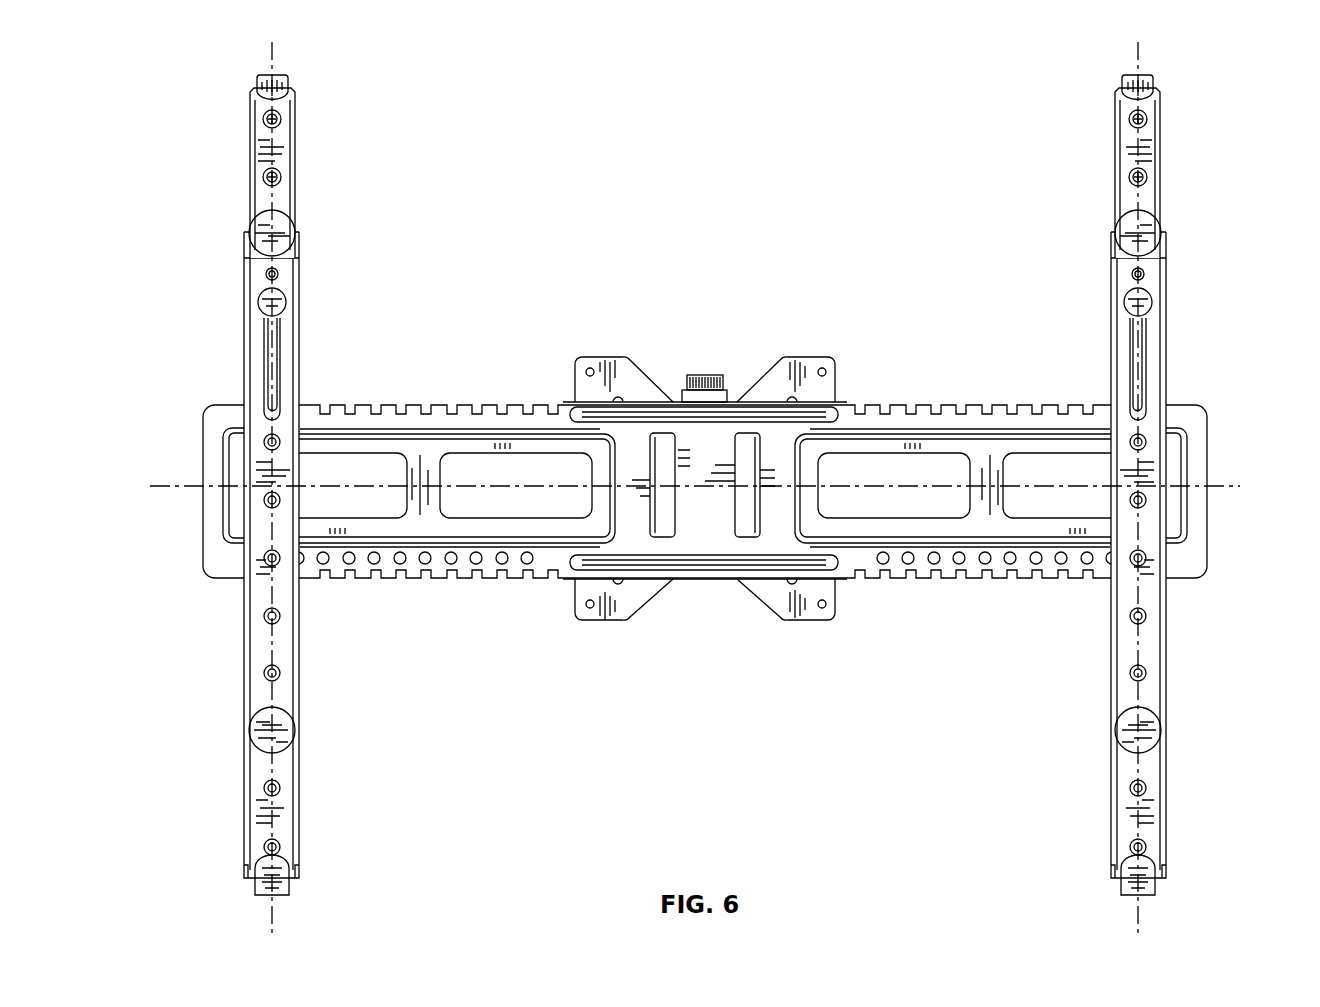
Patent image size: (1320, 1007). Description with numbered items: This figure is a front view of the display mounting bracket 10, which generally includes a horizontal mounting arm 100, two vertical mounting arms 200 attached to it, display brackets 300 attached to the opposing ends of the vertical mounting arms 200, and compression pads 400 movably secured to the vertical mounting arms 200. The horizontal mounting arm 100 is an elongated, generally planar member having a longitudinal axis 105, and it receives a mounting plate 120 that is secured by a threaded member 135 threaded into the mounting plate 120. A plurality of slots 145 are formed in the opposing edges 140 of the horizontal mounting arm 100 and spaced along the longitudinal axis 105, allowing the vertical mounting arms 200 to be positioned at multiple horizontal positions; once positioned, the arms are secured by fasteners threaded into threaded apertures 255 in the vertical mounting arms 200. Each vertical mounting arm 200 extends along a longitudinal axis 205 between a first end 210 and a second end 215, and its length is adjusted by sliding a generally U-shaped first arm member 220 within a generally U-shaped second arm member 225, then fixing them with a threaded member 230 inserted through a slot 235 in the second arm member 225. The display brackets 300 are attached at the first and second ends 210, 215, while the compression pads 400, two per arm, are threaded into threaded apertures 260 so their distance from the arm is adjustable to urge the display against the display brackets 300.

The display mounting bracket 10 is at (470, 212).
The horizontal mounting arm 100 is at (422, 393).
The longitudinal axis 105 is at (1223, 487).
The mounting plate 120 is at (612, 365).
The threaded member 135 is at (703, 374).
The opposing edges 140 is at (897, 405).
The slots 145 is at (958, 403).
The vertical mounting arms 200 is at (220, 355).
The longitudinal axis 205 is at (273, 43).
The first end 210 is at (258, 90).
The second end 215 is at (255, 886).
The first arm member 220 is at (280, 130).
The second arm member 225 is at (285, 645).
The threaded member 230 is at (280, 303).
The slot 235 is at (281, 374).
The threaded apertures 255 is at (266, 441).
The threaded apertures 260 is at (265, 122).
The display brackets 300 is at (291, 78).
The compression pads 400 is at (283, 232).